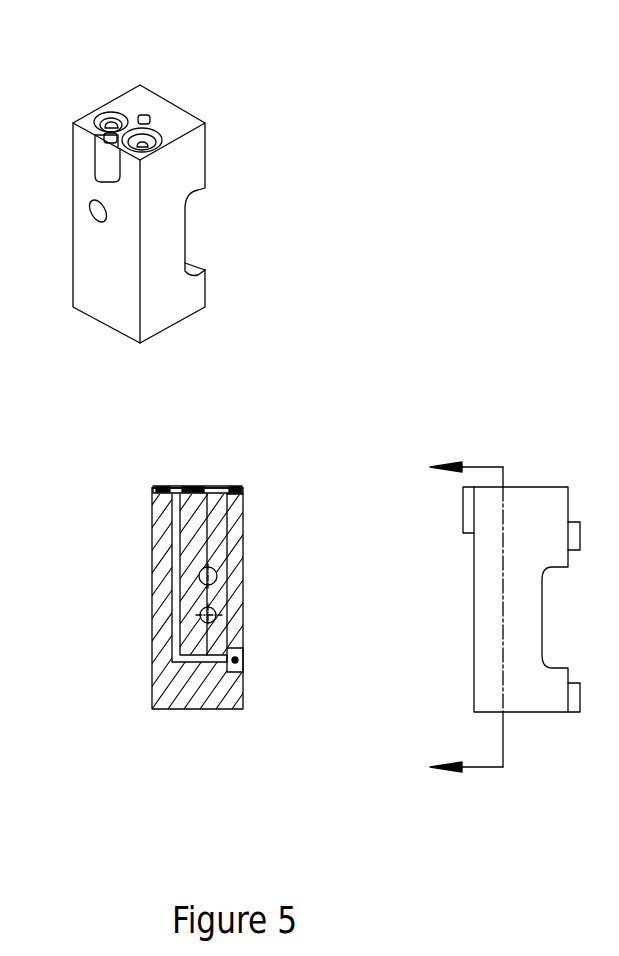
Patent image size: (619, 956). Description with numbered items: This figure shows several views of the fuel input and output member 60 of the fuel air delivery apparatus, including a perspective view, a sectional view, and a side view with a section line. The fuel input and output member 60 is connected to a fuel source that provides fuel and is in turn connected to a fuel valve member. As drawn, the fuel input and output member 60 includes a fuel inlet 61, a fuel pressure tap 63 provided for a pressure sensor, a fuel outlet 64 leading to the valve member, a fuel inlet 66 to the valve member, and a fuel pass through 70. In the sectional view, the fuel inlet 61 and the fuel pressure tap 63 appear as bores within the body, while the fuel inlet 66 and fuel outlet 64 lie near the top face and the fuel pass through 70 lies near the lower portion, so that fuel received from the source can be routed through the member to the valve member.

The fuel input and output member 60 is at (290, 437).
The fuel inlet 61 is at (216, 617).
The fuel pressure tap 63 is at (222, 575).
The fuel outlet 64 is at (237, 498).
The fuel inlet to the valve member 66 is at (155, 490).
The fuel pass through 70 is at (232, 662).